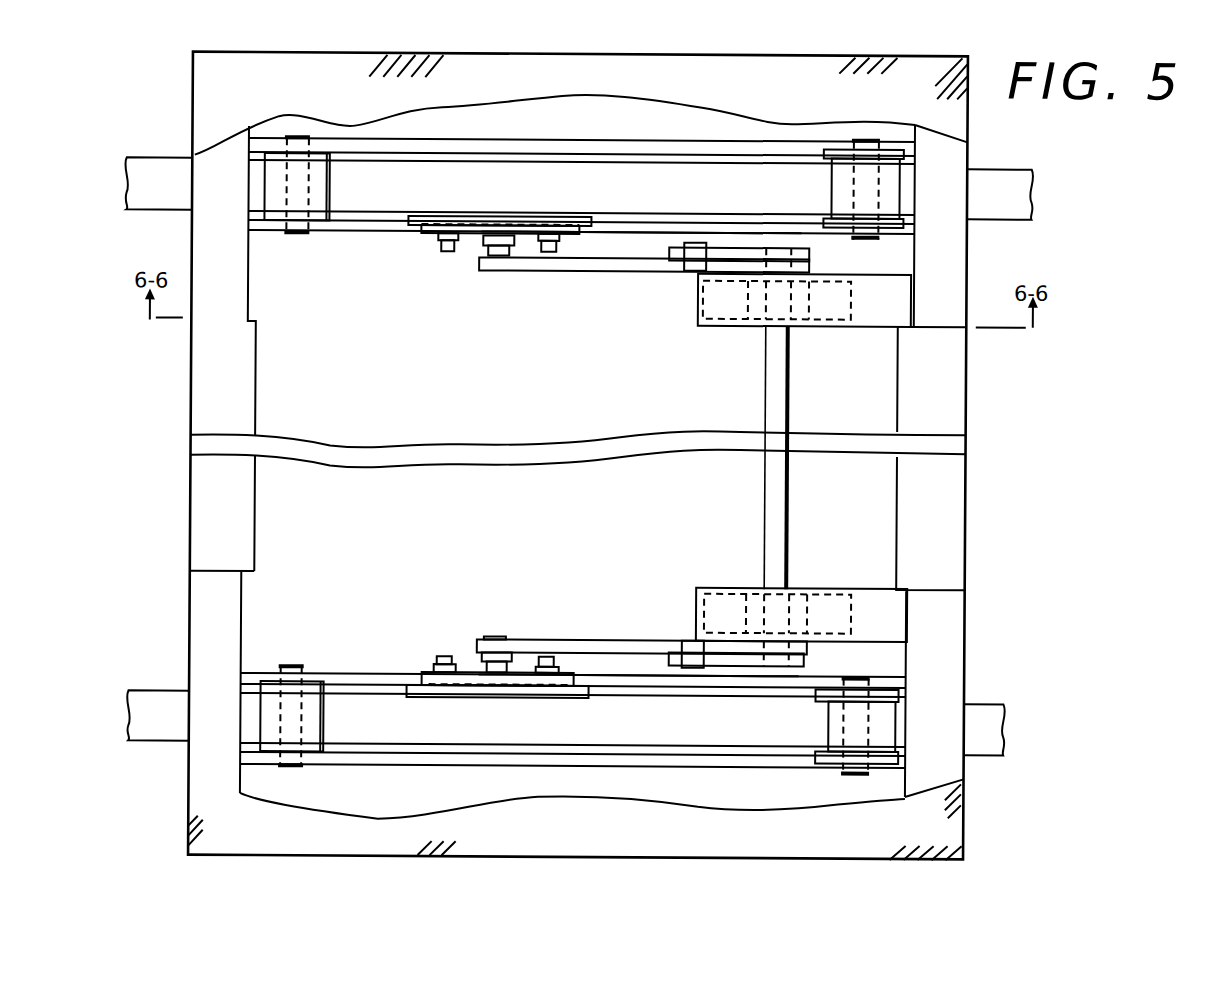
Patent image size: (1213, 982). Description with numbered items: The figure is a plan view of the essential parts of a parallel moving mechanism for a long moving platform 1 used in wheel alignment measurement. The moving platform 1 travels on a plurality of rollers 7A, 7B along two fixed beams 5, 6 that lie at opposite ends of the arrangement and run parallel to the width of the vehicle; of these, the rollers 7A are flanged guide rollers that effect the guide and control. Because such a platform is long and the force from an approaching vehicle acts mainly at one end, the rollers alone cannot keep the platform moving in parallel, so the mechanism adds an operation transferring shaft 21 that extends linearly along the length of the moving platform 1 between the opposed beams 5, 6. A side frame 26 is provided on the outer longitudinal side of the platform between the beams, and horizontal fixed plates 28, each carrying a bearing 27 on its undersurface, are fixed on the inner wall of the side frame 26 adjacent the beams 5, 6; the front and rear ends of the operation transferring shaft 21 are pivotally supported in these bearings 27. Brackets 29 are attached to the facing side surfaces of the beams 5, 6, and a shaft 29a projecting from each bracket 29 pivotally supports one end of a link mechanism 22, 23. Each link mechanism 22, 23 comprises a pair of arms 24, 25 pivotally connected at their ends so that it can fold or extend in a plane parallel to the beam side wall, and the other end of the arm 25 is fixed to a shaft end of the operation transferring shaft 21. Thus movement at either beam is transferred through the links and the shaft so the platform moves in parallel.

The moving platform 1 is at (273, 70).
The beam 5 is at (163, 205).
The beam 6 is at (163, 733).
The roller 7A is at (883, 147).
The roller 7B is at (283, 200).
The operation transferring shaft 21 is at (771, 377).
The link mechanism 22 is at (670, 275).
The link mechanism 23 is at (672, 640).
The arm 24 is at (636, 260).
The arm 25 is at (730, 250).
The side frame 26 is at (947, 366).
The bearing 27 is at (712, 330).
The fixed plate 28 is at (870, 325).
The bracket 29 is at (430, 234).
The shaft 29a is at (482, 246).